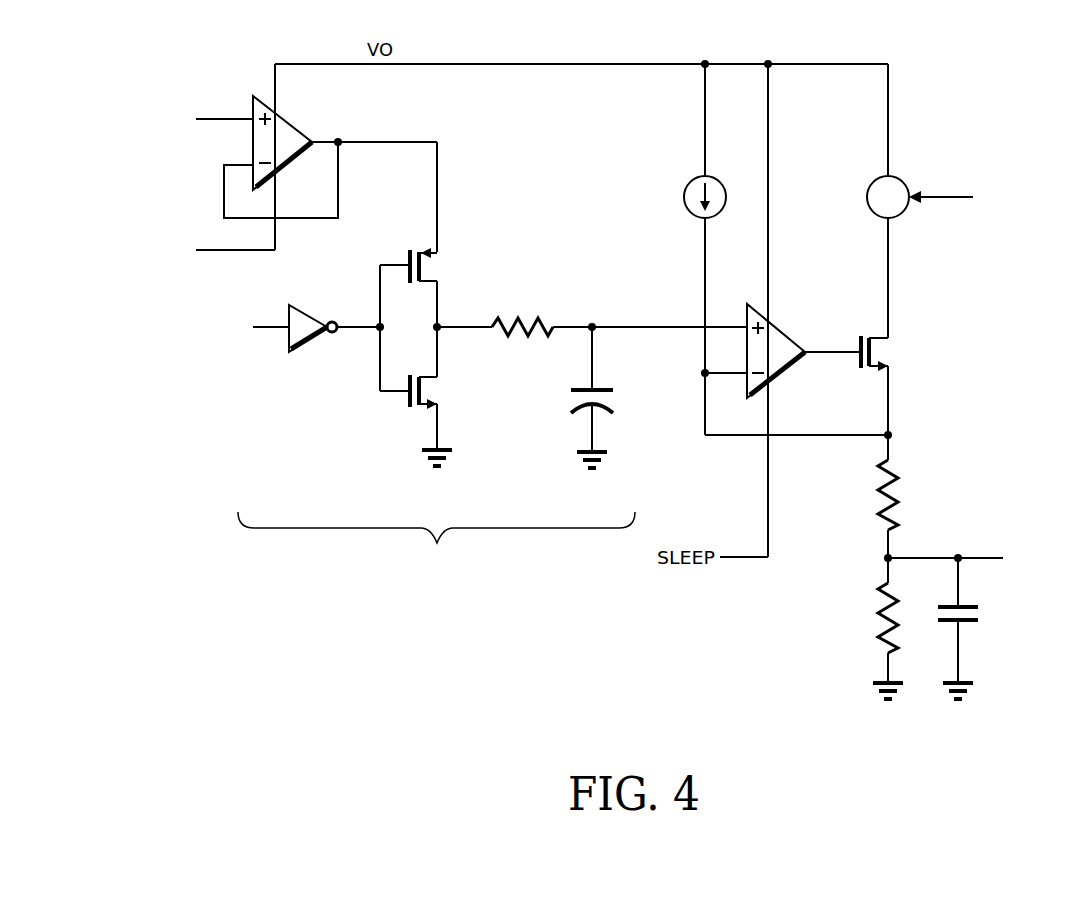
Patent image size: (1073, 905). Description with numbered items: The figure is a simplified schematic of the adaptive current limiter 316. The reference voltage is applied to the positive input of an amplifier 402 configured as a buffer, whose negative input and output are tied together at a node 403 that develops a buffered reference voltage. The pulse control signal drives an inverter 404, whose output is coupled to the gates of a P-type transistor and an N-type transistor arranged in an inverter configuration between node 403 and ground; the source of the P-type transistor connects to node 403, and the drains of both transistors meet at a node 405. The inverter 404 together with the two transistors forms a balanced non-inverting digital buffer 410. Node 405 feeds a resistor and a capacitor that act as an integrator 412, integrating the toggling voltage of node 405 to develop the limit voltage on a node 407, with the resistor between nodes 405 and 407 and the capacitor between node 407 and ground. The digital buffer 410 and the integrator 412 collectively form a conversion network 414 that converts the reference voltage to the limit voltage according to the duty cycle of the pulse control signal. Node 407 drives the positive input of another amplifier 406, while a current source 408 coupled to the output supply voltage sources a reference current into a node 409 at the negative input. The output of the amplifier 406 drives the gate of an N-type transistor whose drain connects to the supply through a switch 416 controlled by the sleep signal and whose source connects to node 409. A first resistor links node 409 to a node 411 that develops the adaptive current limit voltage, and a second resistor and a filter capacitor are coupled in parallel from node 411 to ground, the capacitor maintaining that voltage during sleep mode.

The amplifier 402 is at (293, 120).
The node 403 is at (438, 175).
The inverter 404 is at (305, 305).
The node 405 is at (440, 331).
The amplifier 406 is at (788, 330).
The node 407 is at (593, 322).
The current source 408 is at (692, 182).
The node 409 is at (891, 432).
The balanced non-inverting digital buffer 410 is at (342, 402).
The node 411 is at (886, 561).
The integrator 412 is at (505, 259).
The conversion network 414 is at (436, 542).
The switch 416 is at (903, 182).
The adaptive current limiter 316 is at (483, 775).